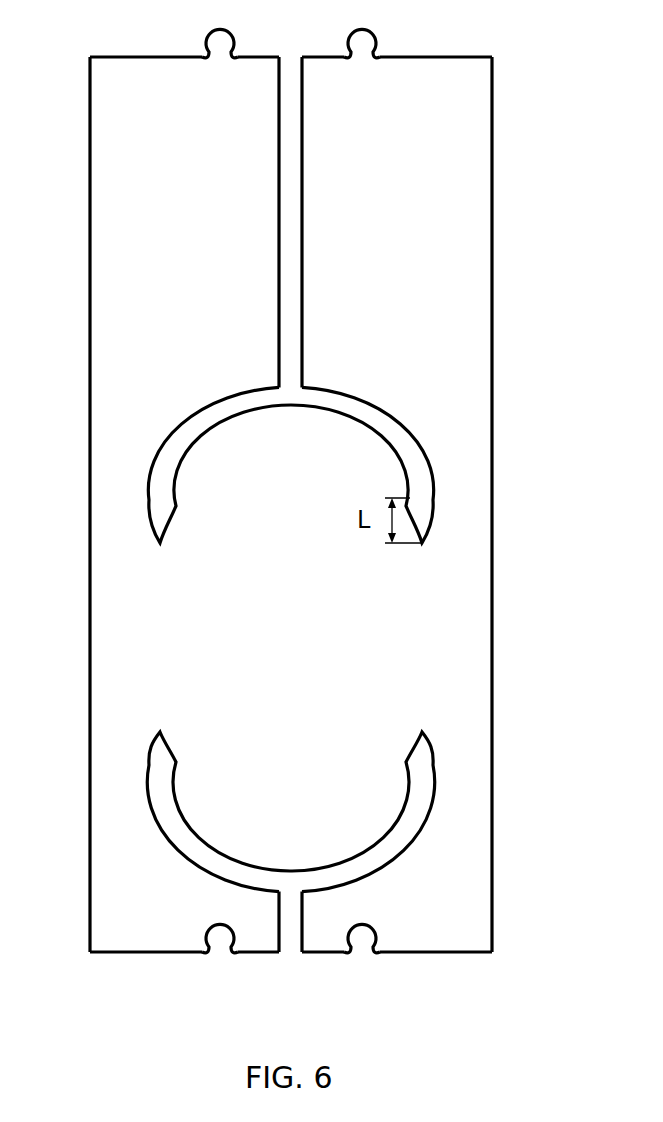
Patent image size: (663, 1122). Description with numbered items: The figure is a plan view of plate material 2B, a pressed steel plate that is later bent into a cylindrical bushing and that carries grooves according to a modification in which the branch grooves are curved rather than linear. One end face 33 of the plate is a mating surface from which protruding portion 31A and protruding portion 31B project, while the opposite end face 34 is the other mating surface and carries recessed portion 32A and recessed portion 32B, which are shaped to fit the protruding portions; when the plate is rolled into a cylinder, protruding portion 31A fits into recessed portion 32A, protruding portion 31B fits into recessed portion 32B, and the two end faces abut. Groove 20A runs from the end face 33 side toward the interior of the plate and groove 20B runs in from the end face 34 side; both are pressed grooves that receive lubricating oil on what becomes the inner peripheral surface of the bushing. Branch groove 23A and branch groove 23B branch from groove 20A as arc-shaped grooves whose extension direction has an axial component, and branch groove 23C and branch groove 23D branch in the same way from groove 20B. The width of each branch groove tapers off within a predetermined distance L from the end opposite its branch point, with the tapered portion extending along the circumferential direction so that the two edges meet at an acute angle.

The plate material 2B is at (526, 141).
The groove 20A is at (290, 246).
The groove 20B is at (290, 928).
The branch groove 23A is at (400, 445).
The branch groove 23B is at (190, 440).
The branch groove 23C is at (408, 825).
The branch groove 23D is at (173, 822).
The protruding portion 31A is at (215, 45).
The protruding portion 31B is at (355, 45).
The recessed portion 32A is at (218, 955).
The recessed portion 32B is at (360, 955).
The end face 33 is at (427, 56).
The end face 34 is at (460, 952).